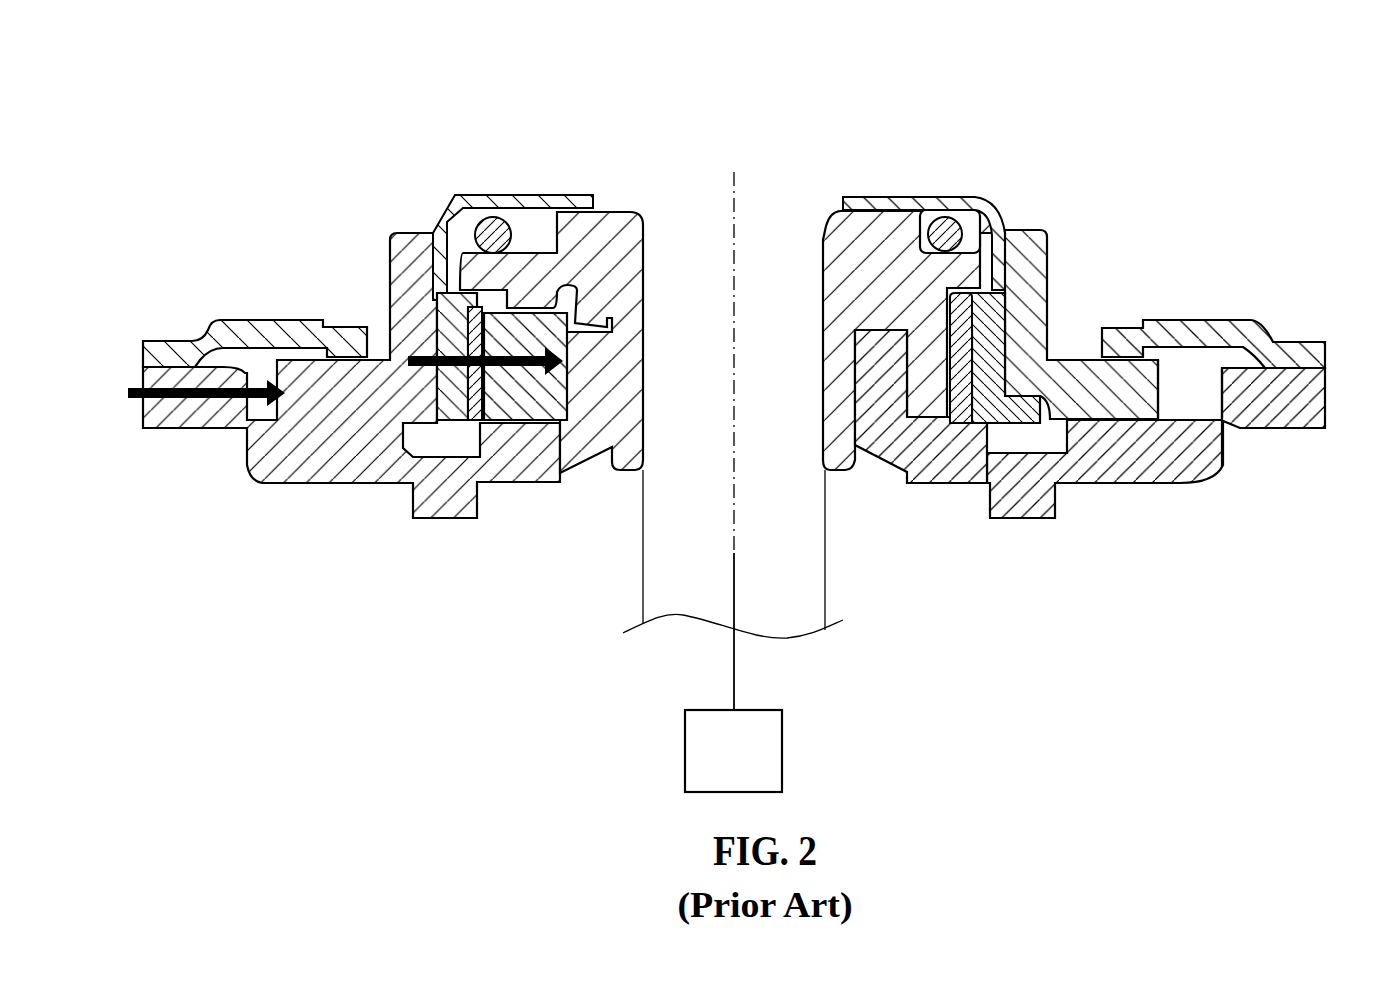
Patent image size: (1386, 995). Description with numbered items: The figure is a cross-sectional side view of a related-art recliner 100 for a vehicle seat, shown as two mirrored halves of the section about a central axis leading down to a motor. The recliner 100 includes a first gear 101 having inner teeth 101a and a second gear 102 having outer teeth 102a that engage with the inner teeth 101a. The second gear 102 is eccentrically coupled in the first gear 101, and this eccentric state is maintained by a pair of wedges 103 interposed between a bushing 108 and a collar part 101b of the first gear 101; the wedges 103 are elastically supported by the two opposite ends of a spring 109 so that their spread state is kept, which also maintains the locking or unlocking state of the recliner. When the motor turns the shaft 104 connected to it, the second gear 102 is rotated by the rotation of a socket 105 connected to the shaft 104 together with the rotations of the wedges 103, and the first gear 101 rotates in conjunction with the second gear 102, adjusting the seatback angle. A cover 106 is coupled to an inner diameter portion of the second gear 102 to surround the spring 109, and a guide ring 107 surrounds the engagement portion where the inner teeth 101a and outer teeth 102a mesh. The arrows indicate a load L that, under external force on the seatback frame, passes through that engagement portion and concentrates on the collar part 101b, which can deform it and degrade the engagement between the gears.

The recliner 100 is at (677, 102).
The first gear 101 is at (1172, 472).
The inner teeth 101a is at (1213, 397).
The collar part 101b is at (877, 370).
The second gear 102 is at (1062, 373).
The outer teeth 102a is at (1168, 367).
The wedges 103 is at (520, 392).
The shaft 104 is at (643, 588).
The socket 105 is at (852, 248).
The cover 106 is at (880, 200).
The guide ring 107 is at (1295, 352).
The bushing 108 is at (987, 407).
The spring 109 is at (948, 233).
The load L is at (420, 357).